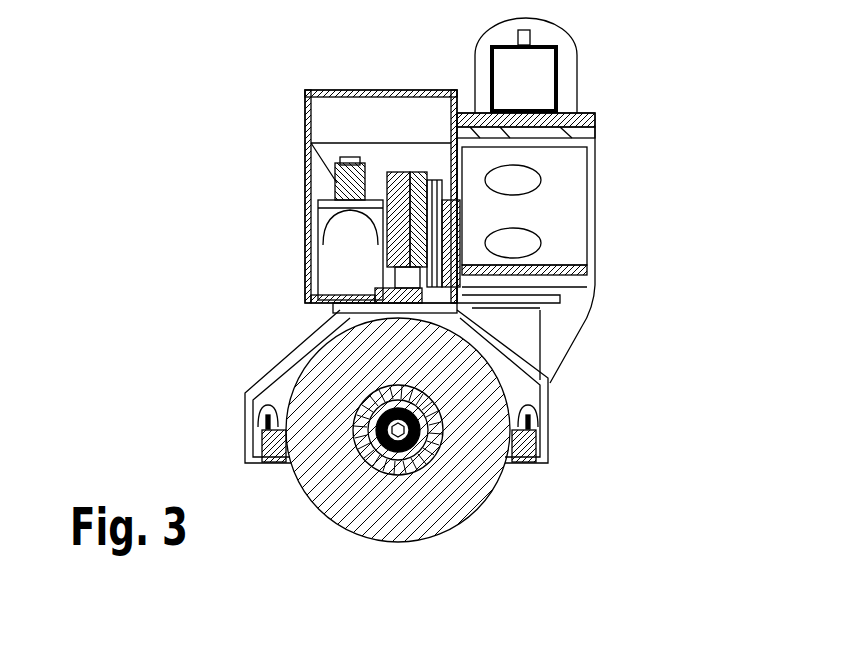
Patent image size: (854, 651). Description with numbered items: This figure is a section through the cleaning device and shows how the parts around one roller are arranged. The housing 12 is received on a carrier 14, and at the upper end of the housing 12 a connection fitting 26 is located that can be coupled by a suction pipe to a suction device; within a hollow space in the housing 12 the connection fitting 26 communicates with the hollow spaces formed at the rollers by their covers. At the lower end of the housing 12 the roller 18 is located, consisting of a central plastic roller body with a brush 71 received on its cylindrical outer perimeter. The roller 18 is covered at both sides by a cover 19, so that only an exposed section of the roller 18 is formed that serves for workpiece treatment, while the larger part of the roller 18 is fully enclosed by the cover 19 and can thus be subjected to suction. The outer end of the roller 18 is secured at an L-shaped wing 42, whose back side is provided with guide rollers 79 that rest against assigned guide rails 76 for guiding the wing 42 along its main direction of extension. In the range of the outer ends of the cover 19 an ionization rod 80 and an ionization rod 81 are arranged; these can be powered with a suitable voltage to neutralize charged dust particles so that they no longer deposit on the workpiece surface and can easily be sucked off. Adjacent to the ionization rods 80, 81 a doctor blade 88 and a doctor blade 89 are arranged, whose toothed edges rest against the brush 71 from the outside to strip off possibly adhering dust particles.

The housing 12 is at (327, 88).
The wing 42 is at (398, 172).
The guide rollers 79 is at (432, 180).
The connection fitting 26 is at (555, 37).
The carrier 14 is at (562, 80).
The guide rails 76 is at (462, 217).
The brush 71 is at (332, 362).
The roller 18 is at (293, 375).
The cover 19 is at (262, 383).
The doctor blade 88 is at (258, 408).
The ionization rod 80 is at (257, 447).
The doctor blade 89 is at (518, 407).
The ionization rod 81 is at (548, 443).